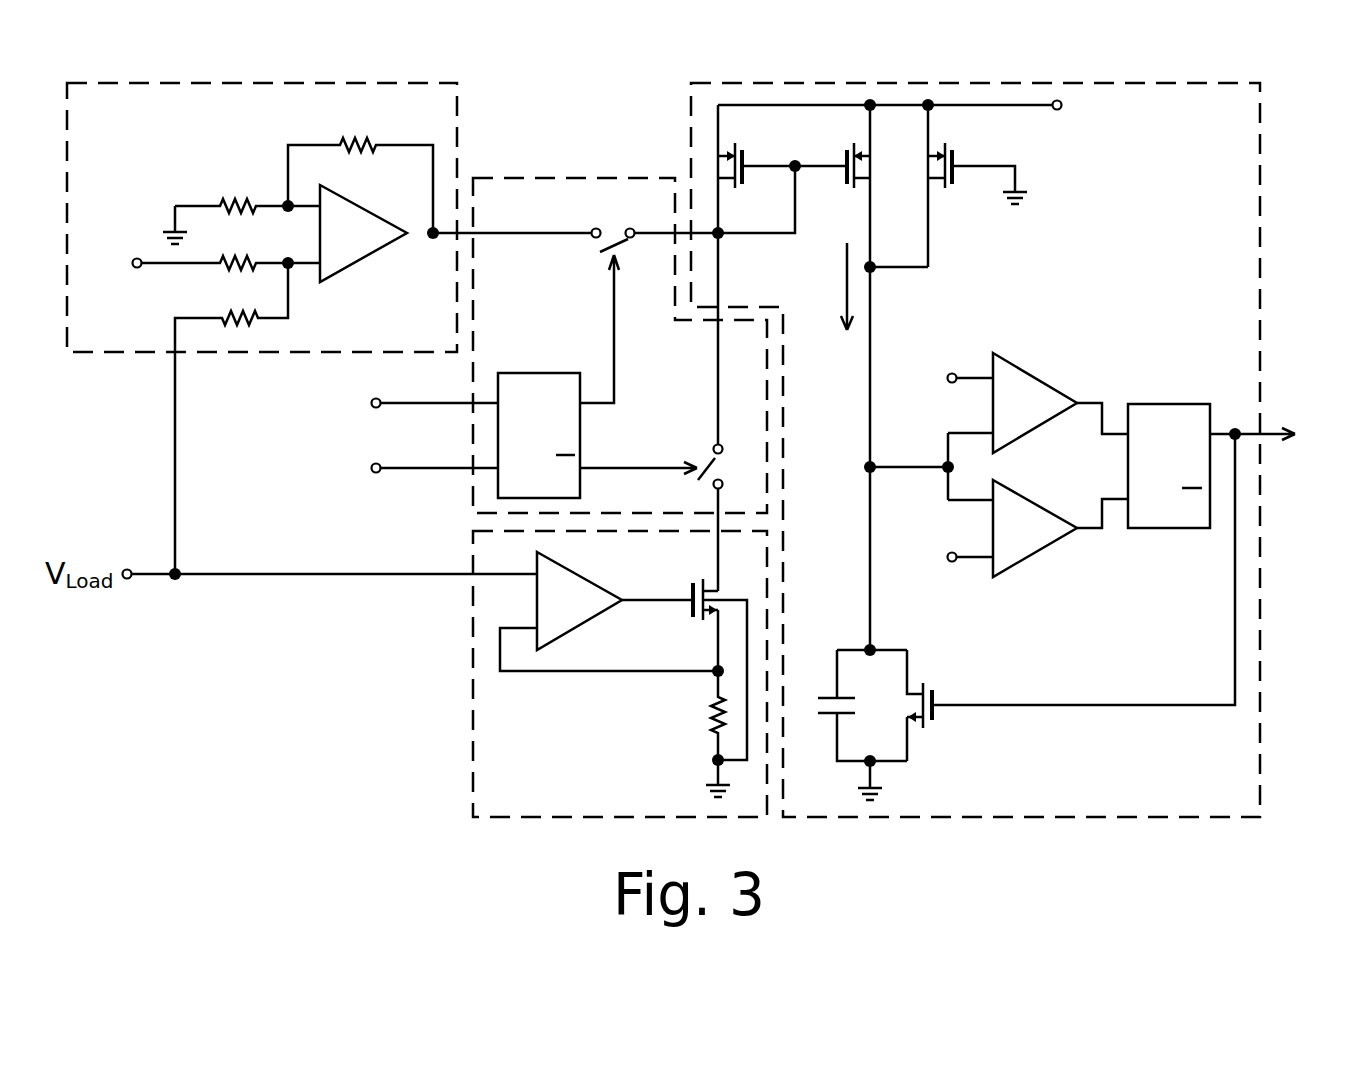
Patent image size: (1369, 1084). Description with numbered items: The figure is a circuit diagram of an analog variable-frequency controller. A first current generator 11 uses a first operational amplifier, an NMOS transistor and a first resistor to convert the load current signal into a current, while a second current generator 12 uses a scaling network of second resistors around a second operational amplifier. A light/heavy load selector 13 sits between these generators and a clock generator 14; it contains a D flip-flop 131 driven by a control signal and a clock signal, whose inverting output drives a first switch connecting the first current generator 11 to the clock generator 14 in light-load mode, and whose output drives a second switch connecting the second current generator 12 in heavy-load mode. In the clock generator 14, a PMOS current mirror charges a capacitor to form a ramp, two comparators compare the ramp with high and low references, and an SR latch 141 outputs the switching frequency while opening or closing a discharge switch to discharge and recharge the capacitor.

The first current generator 11 is at (473, 748).
The second current generator 12 is at (113, 352).
The light/heavy load selector 13 is at (538, 178).
The D flip-flop 131 is at (533, 373).
The clock generator 14 is at (1260, 230).
The SR latch 141 is at (1173, 404).